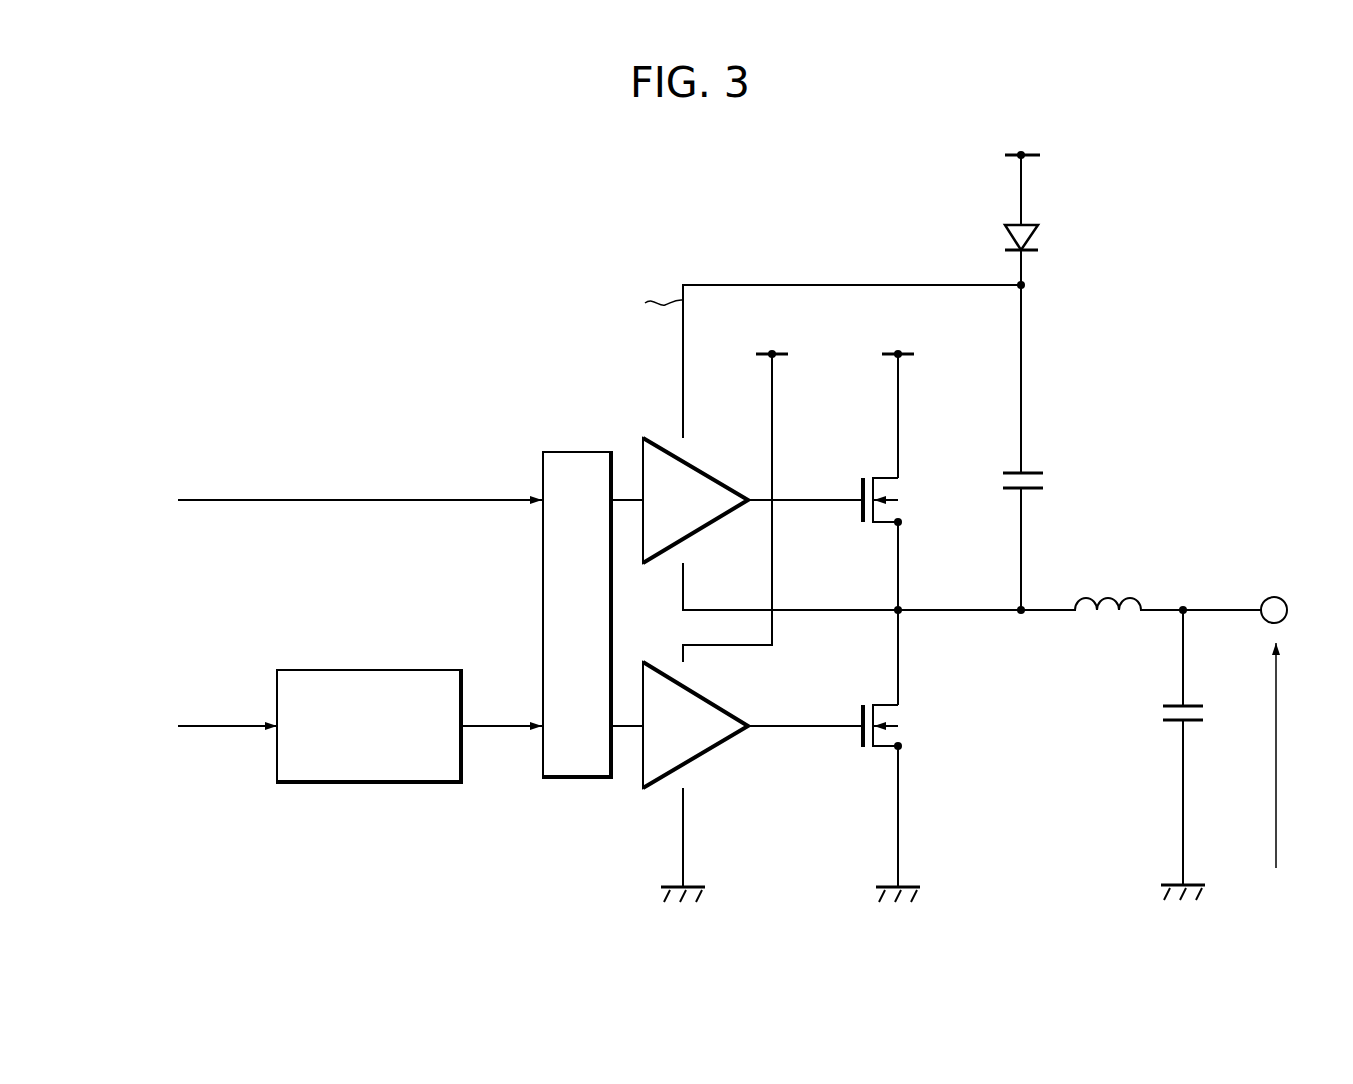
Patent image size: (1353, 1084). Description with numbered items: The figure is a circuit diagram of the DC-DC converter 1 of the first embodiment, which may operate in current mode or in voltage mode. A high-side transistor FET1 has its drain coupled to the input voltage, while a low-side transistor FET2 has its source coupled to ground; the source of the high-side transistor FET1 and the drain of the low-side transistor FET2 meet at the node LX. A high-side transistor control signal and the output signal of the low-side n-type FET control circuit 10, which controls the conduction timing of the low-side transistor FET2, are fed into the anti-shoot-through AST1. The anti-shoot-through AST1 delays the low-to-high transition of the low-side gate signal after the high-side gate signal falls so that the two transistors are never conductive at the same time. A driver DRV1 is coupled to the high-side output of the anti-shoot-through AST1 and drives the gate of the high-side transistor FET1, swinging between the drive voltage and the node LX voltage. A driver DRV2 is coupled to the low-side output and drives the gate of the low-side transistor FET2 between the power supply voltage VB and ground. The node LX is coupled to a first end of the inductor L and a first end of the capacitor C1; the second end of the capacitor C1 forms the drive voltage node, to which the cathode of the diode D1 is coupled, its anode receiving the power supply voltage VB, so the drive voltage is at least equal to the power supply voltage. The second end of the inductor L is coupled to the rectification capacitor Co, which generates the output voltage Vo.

The DC-DC converter 1 is at (492, 252).
The low-side n-type FET control circuit 10 is at (368, 670).
The anti-shoot-through AST1 is at (542, 459).
The driver DRV1 is at (659, 438).
The driver DRV2 is at (659, 791).
The high-side transistor FET1 is at (916, 503).
The low-side transistor FET2 is at (916, 723).
The diode D1 is at (1043, 244).
The capacitor C1 is at (1043, 484).
The inductor L is at (1108, 587).
The rectification capacitor Co is at (1208, 714).